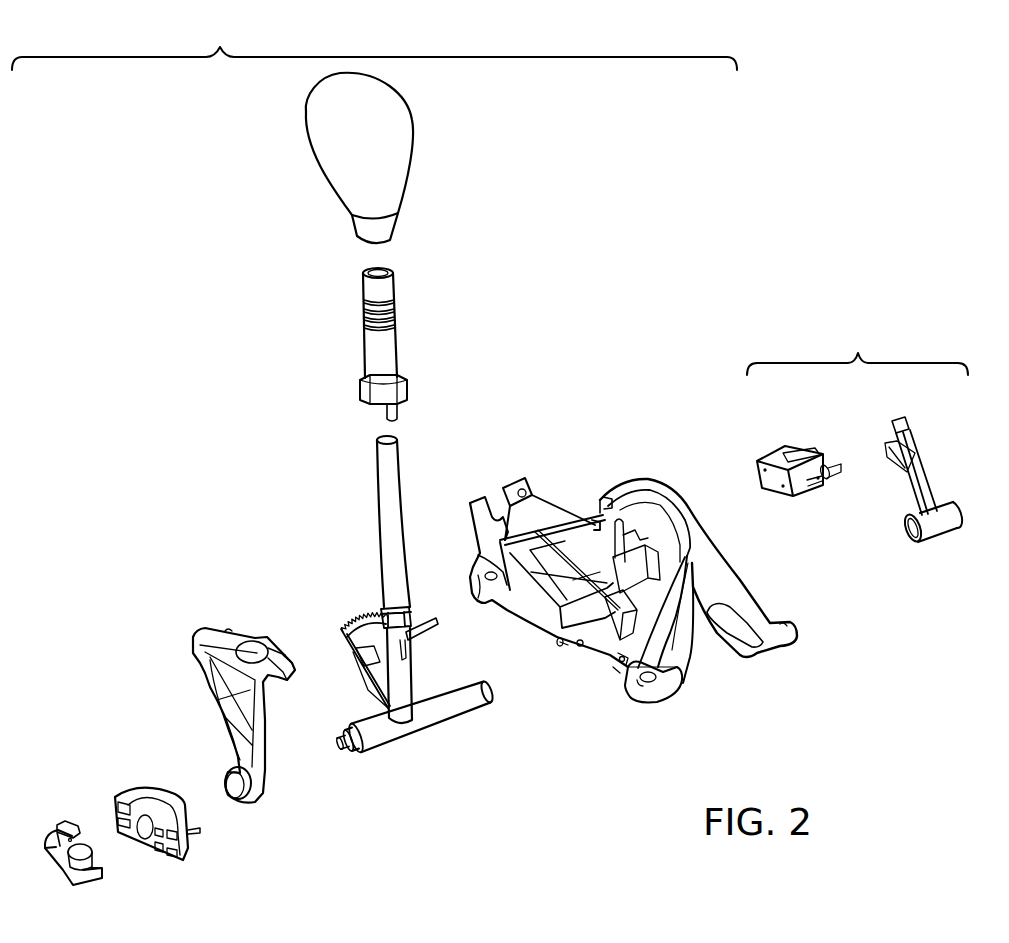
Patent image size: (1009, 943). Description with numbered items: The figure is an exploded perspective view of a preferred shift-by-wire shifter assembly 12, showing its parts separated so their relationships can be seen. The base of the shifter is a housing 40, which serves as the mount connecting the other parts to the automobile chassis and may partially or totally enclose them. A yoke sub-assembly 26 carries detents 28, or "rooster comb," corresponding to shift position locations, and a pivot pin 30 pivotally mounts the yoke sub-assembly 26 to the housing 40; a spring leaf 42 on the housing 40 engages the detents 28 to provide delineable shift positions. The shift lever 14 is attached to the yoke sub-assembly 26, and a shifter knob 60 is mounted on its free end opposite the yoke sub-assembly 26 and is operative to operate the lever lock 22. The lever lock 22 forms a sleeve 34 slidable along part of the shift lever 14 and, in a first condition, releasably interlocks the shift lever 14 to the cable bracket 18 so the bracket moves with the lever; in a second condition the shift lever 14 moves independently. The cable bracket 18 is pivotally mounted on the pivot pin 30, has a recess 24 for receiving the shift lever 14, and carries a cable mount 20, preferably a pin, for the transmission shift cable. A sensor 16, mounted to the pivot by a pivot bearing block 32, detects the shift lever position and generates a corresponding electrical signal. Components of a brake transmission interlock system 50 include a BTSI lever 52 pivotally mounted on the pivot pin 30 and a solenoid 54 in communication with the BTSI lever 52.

The shifter assembly 12 is at (220, 47).
The shift lever 14 is at (378, 496).
The sensor 16 is at (62, 822).
The cable bracket 18 is at (252, 790).
The cable mount 20 is at (214, 617).
The lever lock 22 is at (360, 393).
The recess 24 is at (258, 648).
The yoke sub-assembly 26 is at (403, 703).
The detents 28 is at (345, 627).
The pivot pin 30 is at (467, 715).
The pivot bearing block 32 is at (132, 788).
The sleeve 34 is at (397, 347).
The housing 40 is at (697, 600).
The spring leaf 42 is at (550, 500).
The brake transmission interlock system 50 is at (858, 353).
The BTSI lever 52 is at (940, 502).
The solenoid 54 is at (777, 453).
The shifter knob 60 is at (413, 163).